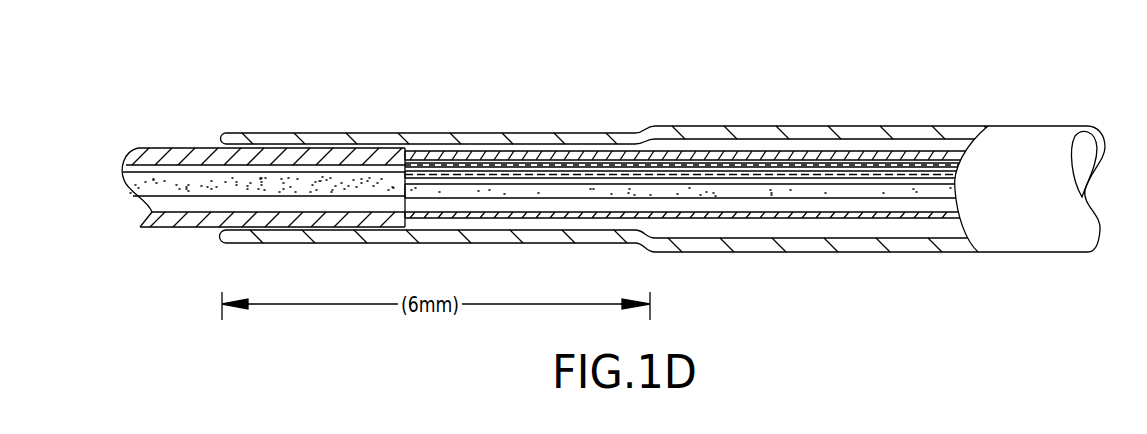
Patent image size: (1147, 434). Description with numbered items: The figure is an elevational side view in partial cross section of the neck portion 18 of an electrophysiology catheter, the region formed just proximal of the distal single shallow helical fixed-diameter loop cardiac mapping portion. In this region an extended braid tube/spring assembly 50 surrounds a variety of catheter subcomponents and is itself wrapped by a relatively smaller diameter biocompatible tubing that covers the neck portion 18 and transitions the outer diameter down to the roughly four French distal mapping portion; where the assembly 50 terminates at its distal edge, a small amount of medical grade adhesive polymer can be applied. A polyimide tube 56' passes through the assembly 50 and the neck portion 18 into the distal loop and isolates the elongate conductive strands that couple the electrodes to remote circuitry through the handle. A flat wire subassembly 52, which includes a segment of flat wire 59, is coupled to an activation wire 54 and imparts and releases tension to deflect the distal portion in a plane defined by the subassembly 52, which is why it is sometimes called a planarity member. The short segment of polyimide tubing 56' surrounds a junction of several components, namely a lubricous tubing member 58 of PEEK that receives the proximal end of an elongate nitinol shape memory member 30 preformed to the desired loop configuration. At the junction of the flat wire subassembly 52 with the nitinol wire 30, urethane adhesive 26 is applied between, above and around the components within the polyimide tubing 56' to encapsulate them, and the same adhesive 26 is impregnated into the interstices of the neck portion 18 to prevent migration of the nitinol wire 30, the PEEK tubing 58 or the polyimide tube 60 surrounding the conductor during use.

The neck portion 18 is at (1032, 125).
The urethane adhesive 26 is at (225, 192).
The elongate shape memory member 30 is at (165, 167).
The extended braid tube/spring assembly 50 is at (395, 133).
The flat wire subassembly 52 is at (676, 157).
The activation wire 54 is at (585, 168).
The polyimide tube 56' is at (550, 115).
The lubricous tubing member 58 is at (450, 160).
The segment of flat wire 59 is at (793, 180).
The polyimide tube 60 is at (757, 207).